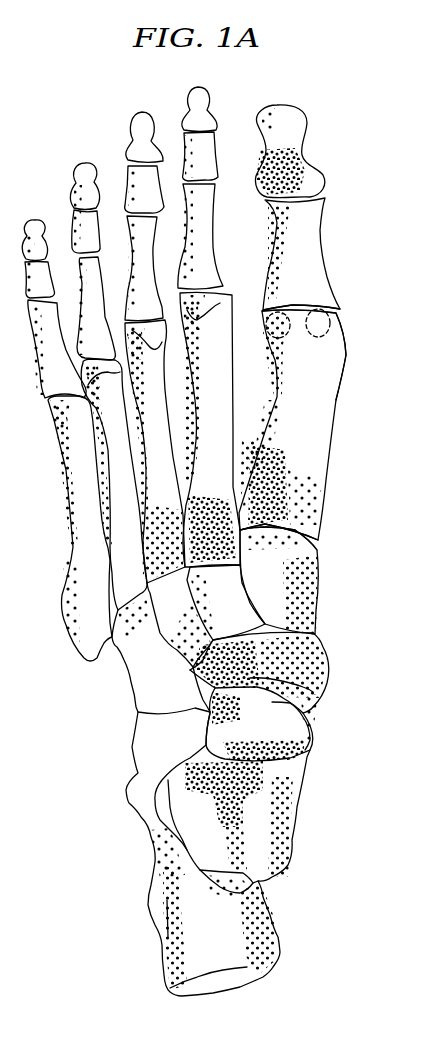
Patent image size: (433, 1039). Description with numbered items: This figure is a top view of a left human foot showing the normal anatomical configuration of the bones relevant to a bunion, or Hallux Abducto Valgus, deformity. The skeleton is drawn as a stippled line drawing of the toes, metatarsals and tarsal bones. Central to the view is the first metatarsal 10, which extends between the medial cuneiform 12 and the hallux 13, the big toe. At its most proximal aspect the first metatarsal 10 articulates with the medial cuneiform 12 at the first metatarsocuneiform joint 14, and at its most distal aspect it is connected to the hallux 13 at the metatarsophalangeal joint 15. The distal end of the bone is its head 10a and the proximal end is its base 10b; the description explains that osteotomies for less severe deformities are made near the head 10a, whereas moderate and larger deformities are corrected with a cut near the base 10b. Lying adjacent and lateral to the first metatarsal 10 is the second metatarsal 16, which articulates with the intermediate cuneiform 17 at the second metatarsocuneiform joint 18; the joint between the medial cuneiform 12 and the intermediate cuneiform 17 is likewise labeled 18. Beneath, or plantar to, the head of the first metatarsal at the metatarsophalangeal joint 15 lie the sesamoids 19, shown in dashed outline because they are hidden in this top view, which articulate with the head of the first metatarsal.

The first metatarsal 10 is at (333, 427).
The head of the first metatarsal 10a is at (345, 349).
The base of the first metatarsal 10b is at (317, 527).
The medial cuneiform 12 is at (318, 617).
The hallux 13 is at (338, 137).
The first metatarsocuneiform joint 14 is at (313, 553).
The metatarsophalangeal joint 15 is at (334, 311).
The second metatarsal 16 is at (232, 421).
The intermediate cuneiform 17 is at (230, 603).
The second metatarsocuneiform joint 18 is at (207, 570).
The sesamoids 19 is at (265, 331).